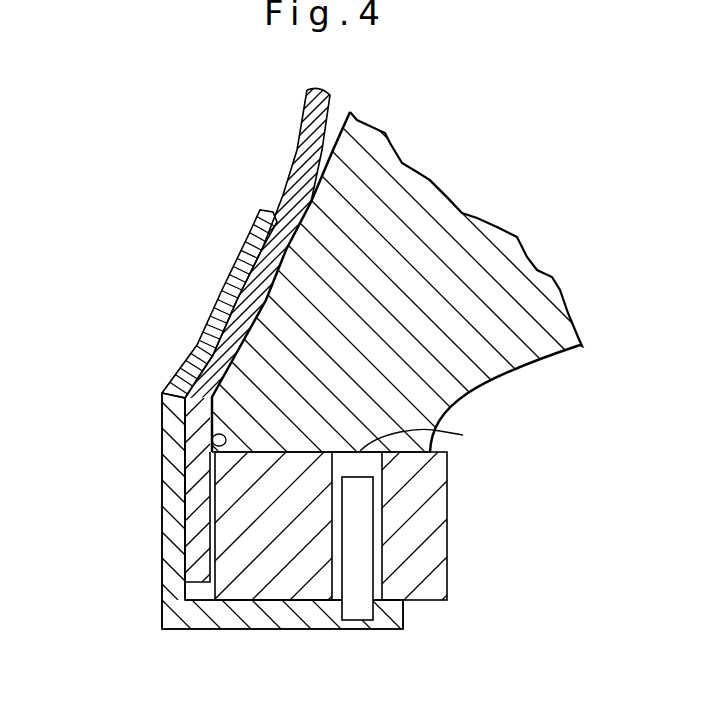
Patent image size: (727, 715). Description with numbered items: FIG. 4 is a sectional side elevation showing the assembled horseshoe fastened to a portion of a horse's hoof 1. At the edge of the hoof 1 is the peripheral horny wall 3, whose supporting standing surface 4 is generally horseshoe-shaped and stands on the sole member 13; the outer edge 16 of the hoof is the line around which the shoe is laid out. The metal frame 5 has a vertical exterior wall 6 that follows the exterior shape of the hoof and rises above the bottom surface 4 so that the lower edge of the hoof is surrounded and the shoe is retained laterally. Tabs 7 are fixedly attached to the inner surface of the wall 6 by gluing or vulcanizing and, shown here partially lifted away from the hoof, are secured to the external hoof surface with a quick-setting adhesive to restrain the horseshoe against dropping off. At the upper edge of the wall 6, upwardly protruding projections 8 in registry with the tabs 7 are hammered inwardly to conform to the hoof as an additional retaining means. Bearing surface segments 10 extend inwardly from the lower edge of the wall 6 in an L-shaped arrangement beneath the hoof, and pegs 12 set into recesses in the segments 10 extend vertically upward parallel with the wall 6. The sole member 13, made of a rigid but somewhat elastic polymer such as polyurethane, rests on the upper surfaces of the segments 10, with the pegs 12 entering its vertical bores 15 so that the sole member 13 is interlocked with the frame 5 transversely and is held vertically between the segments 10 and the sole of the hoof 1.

The hoof 1 is at (480, 200).
The horny wall 3 is at (305, 282).
The standing surface 4 is at (470, 398).
The metal frame 5 is at (157, 616).
The exterior wall 6 is at (175, 502).
The tabs 7 is at (310, 145).
The projections 8 is at (215, 315).
The bearing surface segments 10 is at (257, 615).
The pegs 12 is at (362, 550).
The sole member 13 is at (430, 510).
The bores 15 is at (334, 583).
The outer edge 16 is at (220, 440).